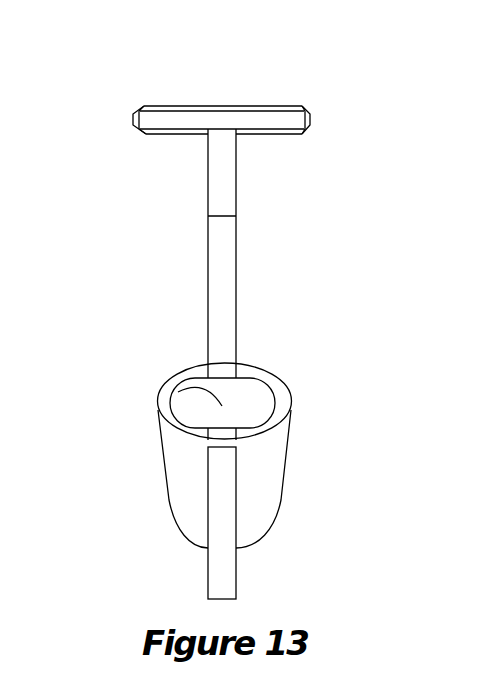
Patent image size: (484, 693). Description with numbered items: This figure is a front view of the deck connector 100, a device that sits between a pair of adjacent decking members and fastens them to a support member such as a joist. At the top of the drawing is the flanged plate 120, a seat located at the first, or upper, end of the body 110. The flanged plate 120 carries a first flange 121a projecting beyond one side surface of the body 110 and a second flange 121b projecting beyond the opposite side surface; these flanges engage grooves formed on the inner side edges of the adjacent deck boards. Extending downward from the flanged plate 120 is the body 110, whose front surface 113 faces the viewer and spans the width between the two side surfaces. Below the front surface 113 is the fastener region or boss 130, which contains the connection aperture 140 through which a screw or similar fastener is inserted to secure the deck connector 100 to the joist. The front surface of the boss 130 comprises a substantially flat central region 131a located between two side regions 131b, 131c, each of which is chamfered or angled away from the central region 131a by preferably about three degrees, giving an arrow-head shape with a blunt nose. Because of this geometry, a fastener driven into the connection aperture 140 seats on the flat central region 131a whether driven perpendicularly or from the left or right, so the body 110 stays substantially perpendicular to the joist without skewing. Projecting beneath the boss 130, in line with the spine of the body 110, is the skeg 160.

The deck connector 100 is at (150, 63).
The body 110 is at (180, 240).
The front surface 113 is at (222, 278).
The flanged plate 120 is at (298, 94).
The first flange 121a is at (133, 116).
The second flange 121b is at (310, 117).
The boss 130 is at (267, 474).
The central region 131a is at (225, 371).
The side region 131b is at (163, 418).
The side region 131c is at (285, 405).
The connection aperture 140 is at (176, 391).
The skeg 160 is at (222, 576).